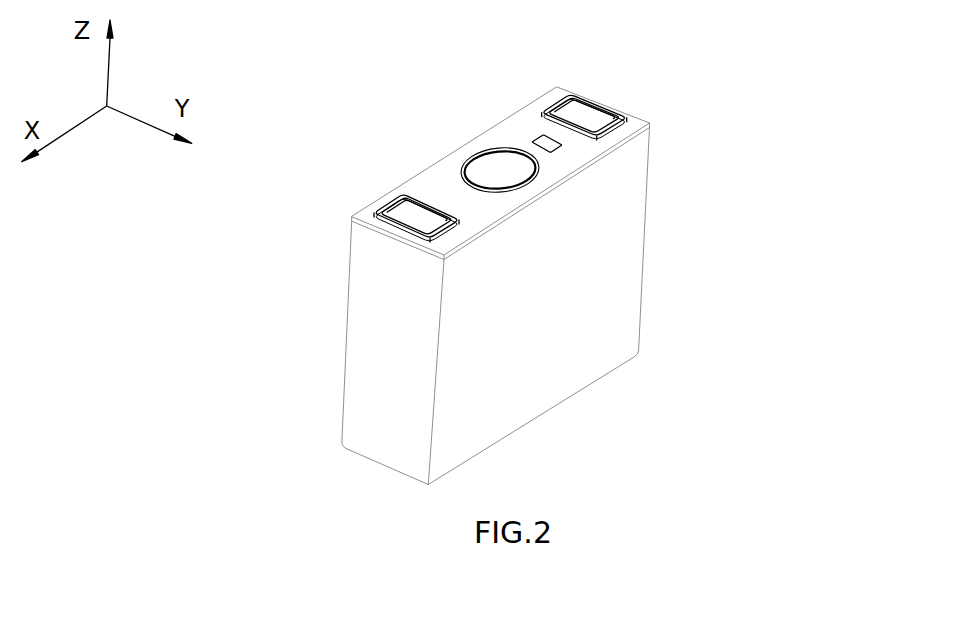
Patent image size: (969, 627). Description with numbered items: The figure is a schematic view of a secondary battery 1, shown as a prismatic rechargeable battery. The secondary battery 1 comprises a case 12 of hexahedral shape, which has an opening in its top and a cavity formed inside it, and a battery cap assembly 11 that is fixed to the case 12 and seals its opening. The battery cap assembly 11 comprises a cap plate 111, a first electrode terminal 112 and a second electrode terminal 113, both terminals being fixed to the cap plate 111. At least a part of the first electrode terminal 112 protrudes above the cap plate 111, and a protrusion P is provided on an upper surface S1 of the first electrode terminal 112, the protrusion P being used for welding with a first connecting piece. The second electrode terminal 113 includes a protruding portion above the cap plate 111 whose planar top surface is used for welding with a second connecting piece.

The secondary battery 1 is at (737, 147).
The battery cap assembly 11 is at (445, 47).
The cap plate 111 is at (482, 142).
The first electrode terminal 112 is at (397, 203).
The second electrode terminal 113 is at (558, 103).
The case 12 is at (617, 300).
The protrusion P is at (442, 215).
The upper surface S1 is at (405, 222).